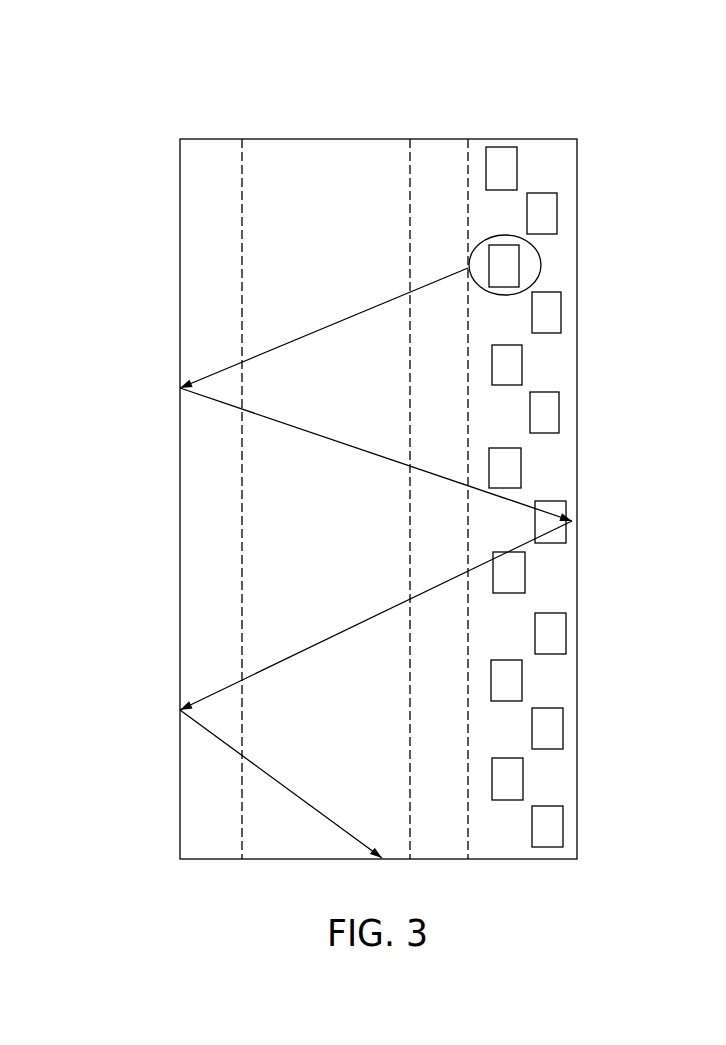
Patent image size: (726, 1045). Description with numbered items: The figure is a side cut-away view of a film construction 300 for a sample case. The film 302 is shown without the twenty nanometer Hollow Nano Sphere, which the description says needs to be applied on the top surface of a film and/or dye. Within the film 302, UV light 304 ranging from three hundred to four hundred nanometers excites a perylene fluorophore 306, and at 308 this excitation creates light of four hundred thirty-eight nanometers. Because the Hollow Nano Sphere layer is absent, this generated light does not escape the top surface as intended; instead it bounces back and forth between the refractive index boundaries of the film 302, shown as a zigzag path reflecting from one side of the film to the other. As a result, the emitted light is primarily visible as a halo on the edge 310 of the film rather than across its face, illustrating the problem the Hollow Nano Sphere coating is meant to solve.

The film construction 300 is at (361, 104).
The film 302 is at (310, 139).
The UV light 304 is at (530, 255).
The perylene fluorophore 306 is at (541, 249).
The emission point 308 is at (270, 350).
The edge 310 is at (577, 521).